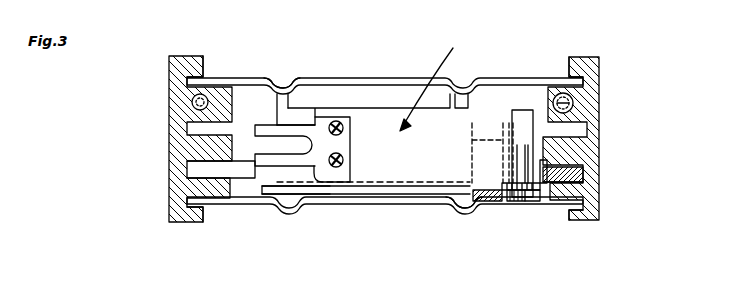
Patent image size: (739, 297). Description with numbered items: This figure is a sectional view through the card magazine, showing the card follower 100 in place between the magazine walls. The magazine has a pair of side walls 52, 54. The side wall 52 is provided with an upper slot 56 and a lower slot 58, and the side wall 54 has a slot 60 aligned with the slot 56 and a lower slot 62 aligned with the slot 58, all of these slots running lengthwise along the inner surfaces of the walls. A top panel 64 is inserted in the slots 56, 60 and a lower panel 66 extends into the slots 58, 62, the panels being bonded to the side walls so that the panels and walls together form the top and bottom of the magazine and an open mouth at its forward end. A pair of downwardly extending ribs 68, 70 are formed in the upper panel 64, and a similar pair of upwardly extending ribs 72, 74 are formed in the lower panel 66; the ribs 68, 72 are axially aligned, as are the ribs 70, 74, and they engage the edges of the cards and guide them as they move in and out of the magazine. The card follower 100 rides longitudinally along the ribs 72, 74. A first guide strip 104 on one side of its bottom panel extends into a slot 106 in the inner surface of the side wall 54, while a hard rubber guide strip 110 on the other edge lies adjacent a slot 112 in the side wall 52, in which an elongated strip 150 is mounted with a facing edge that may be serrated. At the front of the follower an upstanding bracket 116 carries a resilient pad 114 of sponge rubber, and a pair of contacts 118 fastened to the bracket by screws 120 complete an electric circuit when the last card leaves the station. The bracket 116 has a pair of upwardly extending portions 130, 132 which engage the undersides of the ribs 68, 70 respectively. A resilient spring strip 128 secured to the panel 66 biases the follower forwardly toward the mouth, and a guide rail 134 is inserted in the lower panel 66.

The side wall 52 is at (594, 98).
The side wall 54 is at (180, 187).
The upper slot 56 is at (566, 74).
The lower slot 58 is at (567, 212).
The slot 60 is at (208, 77).
The lower slot 62 is at (205, 214).
The top panel 64 is at (408, 78).
The lower panel 66 is at (370, 206).
The rib 68 is at (463, 92).
The rib 70 is at (286, 94).
The rib 72 is at (458, 212).
The rib 74 is at (282, 197).
The card follower 100 is at (438, 84).
The first guide strip 104 is at (245, 172).
The slot 106 is at (187, 170).
The guide strip 110 is at (538, 204).
The slot 112 is at (585, 178).
The resilient pad 114 is at (505, 112).
The upstanding bracket 116 is at (298, 118).
The contacts 118 is at (264, 135).
The screws 120 is at (338, 122).
The resilient spring strip 128 is at (483, 204).
The upwardly extending portion 130 is at (505, 104).
The upwardly extending portion 132 is at (267, 84).
The guide rail 134 is at (516, 204).
The elongated strip 150 is at (584, 170).